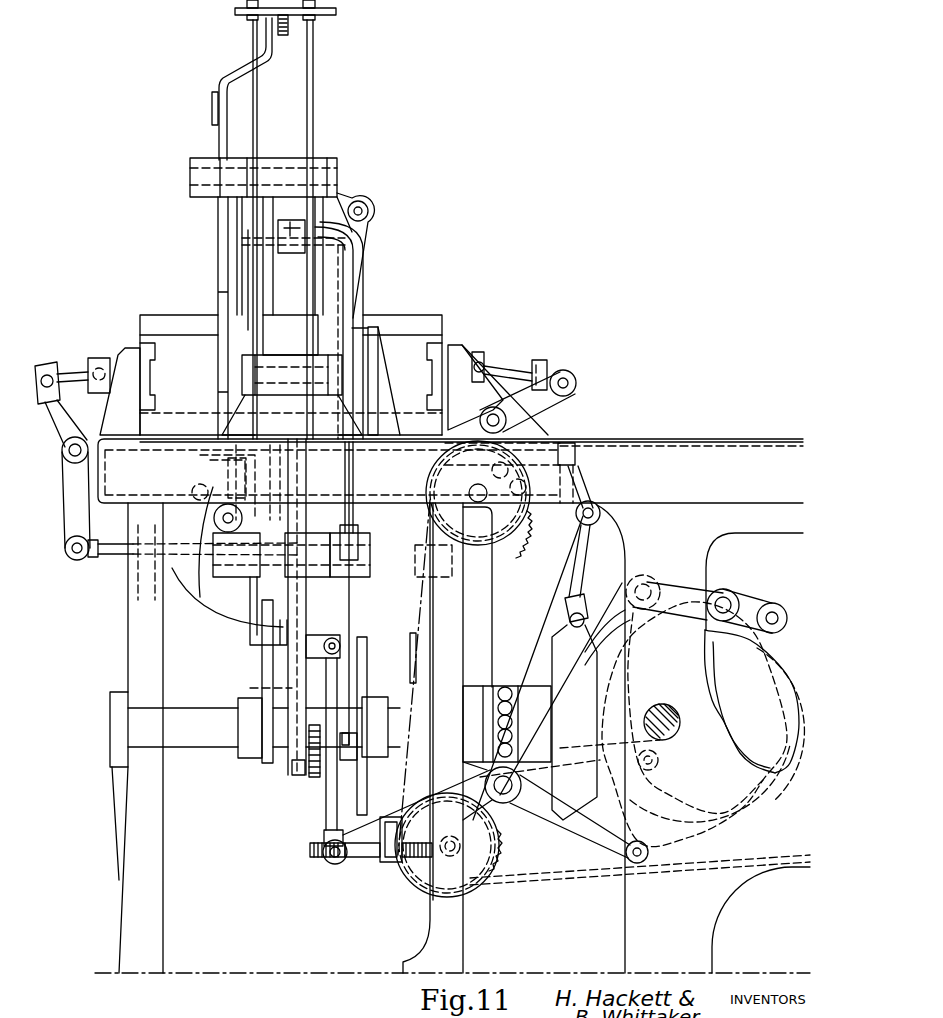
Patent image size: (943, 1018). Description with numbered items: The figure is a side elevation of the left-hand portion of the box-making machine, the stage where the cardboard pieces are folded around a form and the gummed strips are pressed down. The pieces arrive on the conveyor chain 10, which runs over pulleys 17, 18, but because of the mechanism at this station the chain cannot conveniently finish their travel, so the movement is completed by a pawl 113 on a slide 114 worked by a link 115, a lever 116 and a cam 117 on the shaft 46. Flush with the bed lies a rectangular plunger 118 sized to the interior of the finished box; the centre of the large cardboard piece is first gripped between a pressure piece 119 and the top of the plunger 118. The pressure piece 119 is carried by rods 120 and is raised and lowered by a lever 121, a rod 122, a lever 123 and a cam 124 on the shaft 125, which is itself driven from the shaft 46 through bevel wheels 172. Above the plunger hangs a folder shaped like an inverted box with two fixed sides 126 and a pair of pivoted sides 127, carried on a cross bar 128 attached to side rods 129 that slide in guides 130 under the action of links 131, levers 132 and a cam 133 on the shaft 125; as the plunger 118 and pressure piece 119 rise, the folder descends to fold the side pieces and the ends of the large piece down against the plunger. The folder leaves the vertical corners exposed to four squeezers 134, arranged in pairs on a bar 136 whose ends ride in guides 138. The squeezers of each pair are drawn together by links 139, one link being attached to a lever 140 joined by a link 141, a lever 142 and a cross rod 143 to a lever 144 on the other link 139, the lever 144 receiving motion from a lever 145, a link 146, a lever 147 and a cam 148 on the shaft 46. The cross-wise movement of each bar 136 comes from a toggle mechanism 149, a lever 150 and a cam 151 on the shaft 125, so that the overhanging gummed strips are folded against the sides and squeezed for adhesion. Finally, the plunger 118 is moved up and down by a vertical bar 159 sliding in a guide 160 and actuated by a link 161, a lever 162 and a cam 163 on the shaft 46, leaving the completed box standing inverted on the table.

The conveyor chain 10 is at (412, 641).
The pulley 17 is at (513, 531).
The pulley 18 is at (498, 860).
The shaft 46 is at (681, 722).
The pawl 113 is at (538, 420).
The slide 114 is at (450, 471).
The link 115 is at (576, 516).
The lever 116 is at (552, 630).
The cam 117 is at (688, 840).
The rectangular plunger 118 is at (235, 440).
The pressure piece 119 is at (233, 260).
The rods 120 is at (307, 118).
The lever 121 is at (260, 68).
The rod 122 is at (218, 292).
The lever 123 is at (222, 525).
The cam 124 is at (262, 670).
The shaft 125 is at (203, 740).
The fixed sides 126 is at (238, 262).
The pivoted sides 127 is at (347, 273).
The cross bar 128 is at (290, 226).
The side rods 129 is at (363, 302).
The guides 130 is at (366, 362).
The links 131 is at (353, 517).
The levers 132 is at (349, 616).
The cam 133 is at (367, 666).
The squeezers 134 is at (145, 322).
The bar 136 is at (170, 357).
The guides 138 is at (155, 385).
The links 139 is at (72, 372).
The lever 140 is at (83, 505).
The link 141 is at (110, 558).
The lever 142 is at (213, 492).
The cross rod 143 is at (304, 482).
The lever 144 is at (492, 370).
The lever 145 is at (573, 451).
The link 146 is at (572, 565).
The lever 147 is at (688, 590).
The cam 148 is at (777, 658).
The toggle mechanism 149 is at (257, 482).
The lever 150 is at (300, 600).
The cam 151 is at (313, 779).
The vertical bar 159 is at (254, 688).
The guide 160 is at (262, 594).
The link 161 is at (330, 816).
The lever 162 is at (568, 762).
The cam 163 is at (758, 802).
The bevel wheels 172 is at (552, 665).